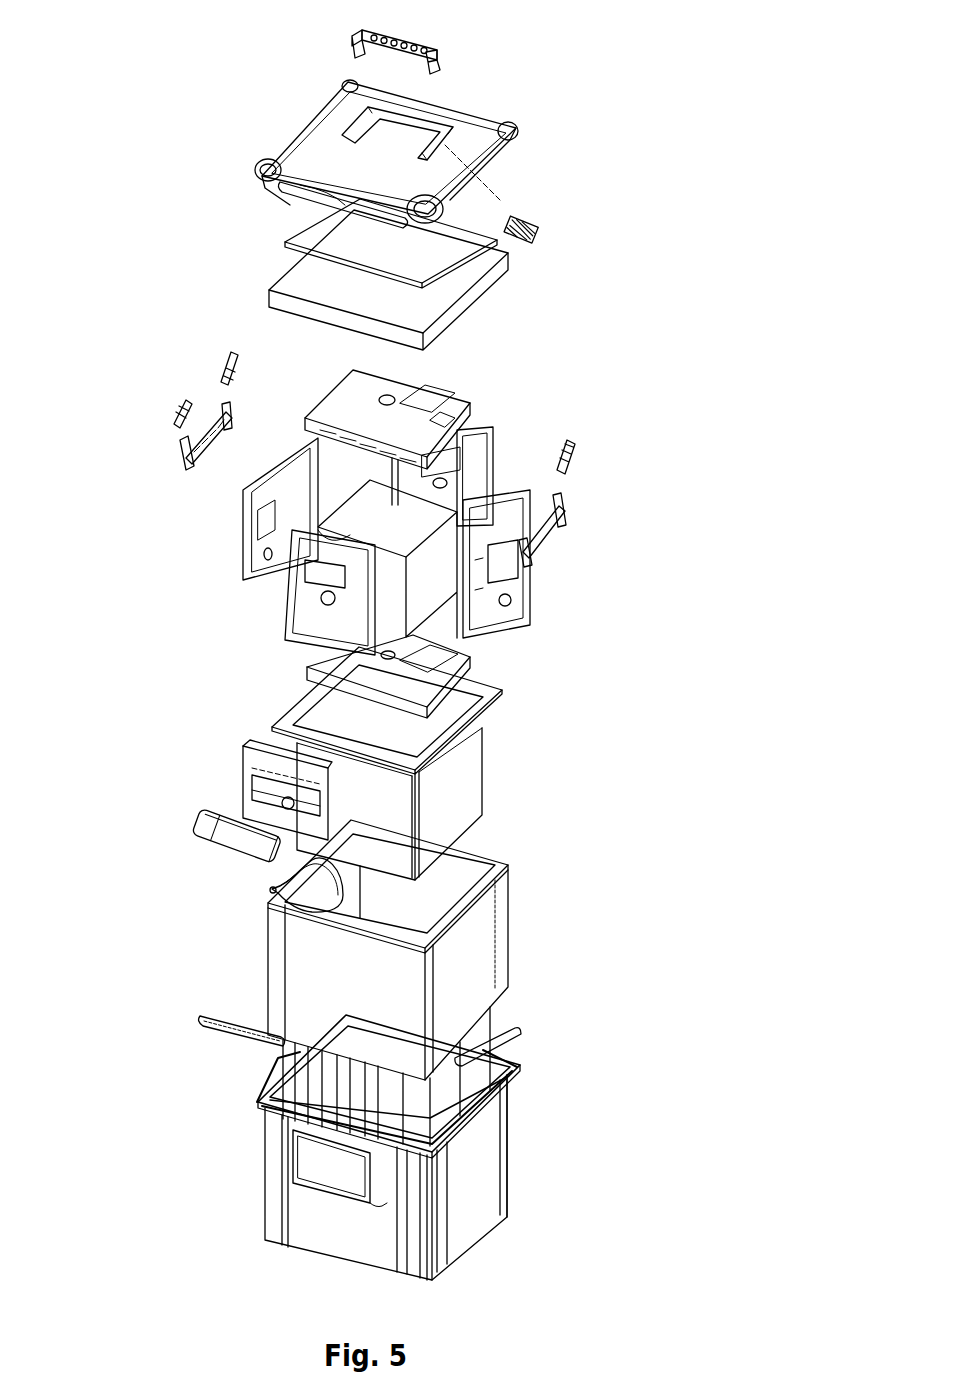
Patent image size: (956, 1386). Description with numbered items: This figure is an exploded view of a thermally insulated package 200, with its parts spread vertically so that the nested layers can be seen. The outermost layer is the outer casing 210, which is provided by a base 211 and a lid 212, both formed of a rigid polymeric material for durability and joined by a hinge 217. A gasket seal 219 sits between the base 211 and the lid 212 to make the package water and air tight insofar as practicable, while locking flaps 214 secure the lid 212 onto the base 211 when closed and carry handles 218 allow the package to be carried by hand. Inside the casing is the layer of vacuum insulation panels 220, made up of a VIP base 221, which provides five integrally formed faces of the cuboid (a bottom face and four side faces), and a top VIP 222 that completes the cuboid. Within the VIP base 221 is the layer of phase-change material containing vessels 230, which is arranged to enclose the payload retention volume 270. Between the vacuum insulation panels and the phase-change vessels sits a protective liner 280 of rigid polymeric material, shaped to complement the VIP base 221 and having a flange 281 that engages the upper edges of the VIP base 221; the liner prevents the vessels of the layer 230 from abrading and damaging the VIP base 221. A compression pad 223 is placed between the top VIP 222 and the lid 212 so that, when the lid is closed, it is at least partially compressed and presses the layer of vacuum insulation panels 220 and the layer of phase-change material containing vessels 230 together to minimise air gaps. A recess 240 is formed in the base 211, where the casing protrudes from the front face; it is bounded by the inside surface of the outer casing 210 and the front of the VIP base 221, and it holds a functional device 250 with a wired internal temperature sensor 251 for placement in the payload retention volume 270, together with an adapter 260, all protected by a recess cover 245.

The thermally insulated package 200 is at (222, 122).
The outer casing 210 is at (510, 1203).
The base 211 is at (513, 1177).
The lid 212 is at (517, 133).
The locking flaps 214 is at (172, 420).
The hinge 217 is at (538, 230).
The carry handles 218 is at (437, 50).
The gasket seal 219 is at (520, 1032).
The layer of vacuum insulation panels 220 is at (511, 957).
The VIP base 221 is at (484, 880).
The top VIP 222 is at (486, 305).
The compression pad 223 is at (482, 210).
The layer of phase-change material containing vessels 230 is at (486, 600).
The recess 240 is at (300, 1123).
The recess cover 245 is at (200, 1023).
The functional device 250 is at (200, 823).
The internal temperature sensor 251 is at (270, 888).
The adapter 260 is at (242, 752).
The payload retention volume 270 is at (458, 512).
The protective liner 280 is at (476, 778).
The flange 281 is at (490, 700).